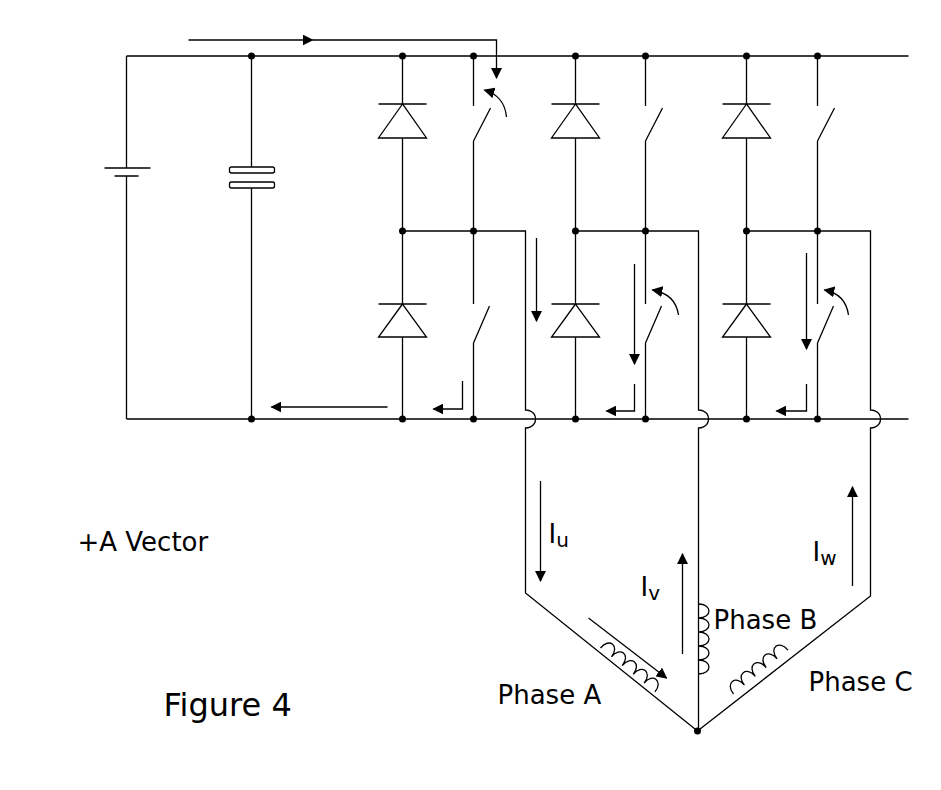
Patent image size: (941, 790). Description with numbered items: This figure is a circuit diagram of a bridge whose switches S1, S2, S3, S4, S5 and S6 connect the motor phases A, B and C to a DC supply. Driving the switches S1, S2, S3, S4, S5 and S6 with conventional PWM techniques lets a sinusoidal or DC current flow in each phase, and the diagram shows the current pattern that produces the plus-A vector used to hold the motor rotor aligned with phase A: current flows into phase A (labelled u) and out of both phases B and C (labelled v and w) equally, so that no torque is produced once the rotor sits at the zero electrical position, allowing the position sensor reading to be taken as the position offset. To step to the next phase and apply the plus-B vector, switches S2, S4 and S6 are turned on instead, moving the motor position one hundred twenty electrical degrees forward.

The switch S1 is at (498, 143).
The switch S2 is at (671, 143).
The switch S3 is at (842, 143).
The switch S4 is at (497, 325).
The switch S5 is at (671, 325).
The switch S6 is at (842, 325).